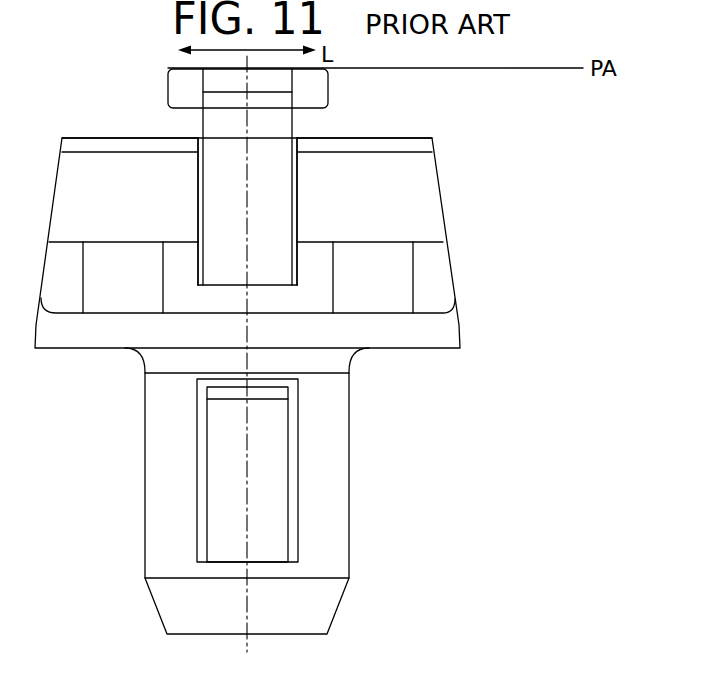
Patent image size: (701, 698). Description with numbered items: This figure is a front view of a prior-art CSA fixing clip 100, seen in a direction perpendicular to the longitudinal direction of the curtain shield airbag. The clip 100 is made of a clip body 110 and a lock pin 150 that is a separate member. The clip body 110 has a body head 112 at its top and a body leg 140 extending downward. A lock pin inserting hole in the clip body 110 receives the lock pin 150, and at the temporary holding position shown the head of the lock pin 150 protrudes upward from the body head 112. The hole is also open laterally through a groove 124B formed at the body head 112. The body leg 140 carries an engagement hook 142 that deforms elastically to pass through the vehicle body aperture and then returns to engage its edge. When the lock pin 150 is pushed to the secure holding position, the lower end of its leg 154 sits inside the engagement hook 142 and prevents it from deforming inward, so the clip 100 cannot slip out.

The CSA fixing clip 100 is at (456, 199).
The clip body 110 is at (454, 280).
The body head 112 is at (438, 163).
The groove 124B is at (295, 255).
The body leg 140 is at (350, 515).
The engagement hook 142 is at (231, 402).
The lock pin 150 is at (190, 93).
The leg of the lock pin 154 is at (232, 268).